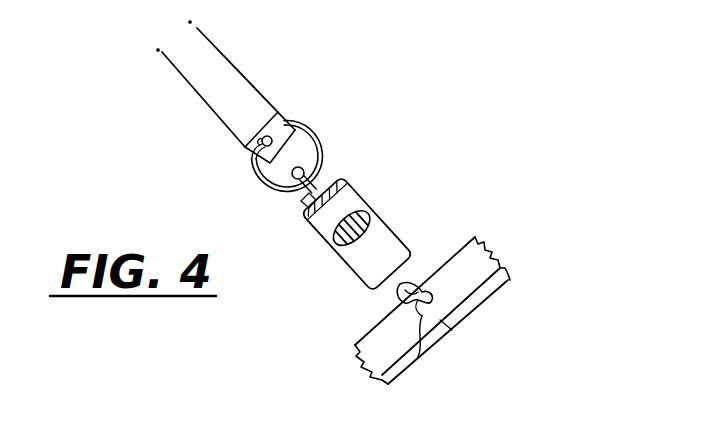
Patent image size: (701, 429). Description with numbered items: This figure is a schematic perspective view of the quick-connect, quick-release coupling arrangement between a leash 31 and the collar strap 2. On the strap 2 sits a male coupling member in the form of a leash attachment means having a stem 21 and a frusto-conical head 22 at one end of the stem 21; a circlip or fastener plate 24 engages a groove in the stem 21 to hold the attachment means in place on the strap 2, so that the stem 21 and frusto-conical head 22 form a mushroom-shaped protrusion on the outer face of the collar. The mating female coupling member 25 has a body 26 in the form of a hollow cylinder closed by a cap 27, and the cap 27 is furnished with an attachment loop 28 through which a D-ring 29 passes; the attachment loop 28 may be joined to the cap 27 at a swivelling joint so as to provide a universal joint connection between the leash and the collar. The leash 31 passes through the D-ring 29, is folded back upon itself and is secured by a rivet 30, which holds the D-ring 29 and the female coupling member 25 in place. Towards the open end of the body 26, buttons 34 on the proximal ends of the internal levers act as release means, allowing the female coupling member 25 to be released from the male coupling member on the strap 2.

The strap 2 is at (493, 288).
The stem 21 is at (445, 323).
The frusto-conical head 22 is at (418, 282).
The circlip or fastener plate 24 is at (418, 357).
The female coupling member 25 is at (322, 245).
The body 26 is at (360, 197).
The cap 27 is at (302, 205).
The attachment loop 28 is at (318, 182).
The D-ring 29 is at (317, 133).
The rivet 30 is at (257, 163).
The leash 31 is at (229, 80).
The buttons 34 is at (364, 219).